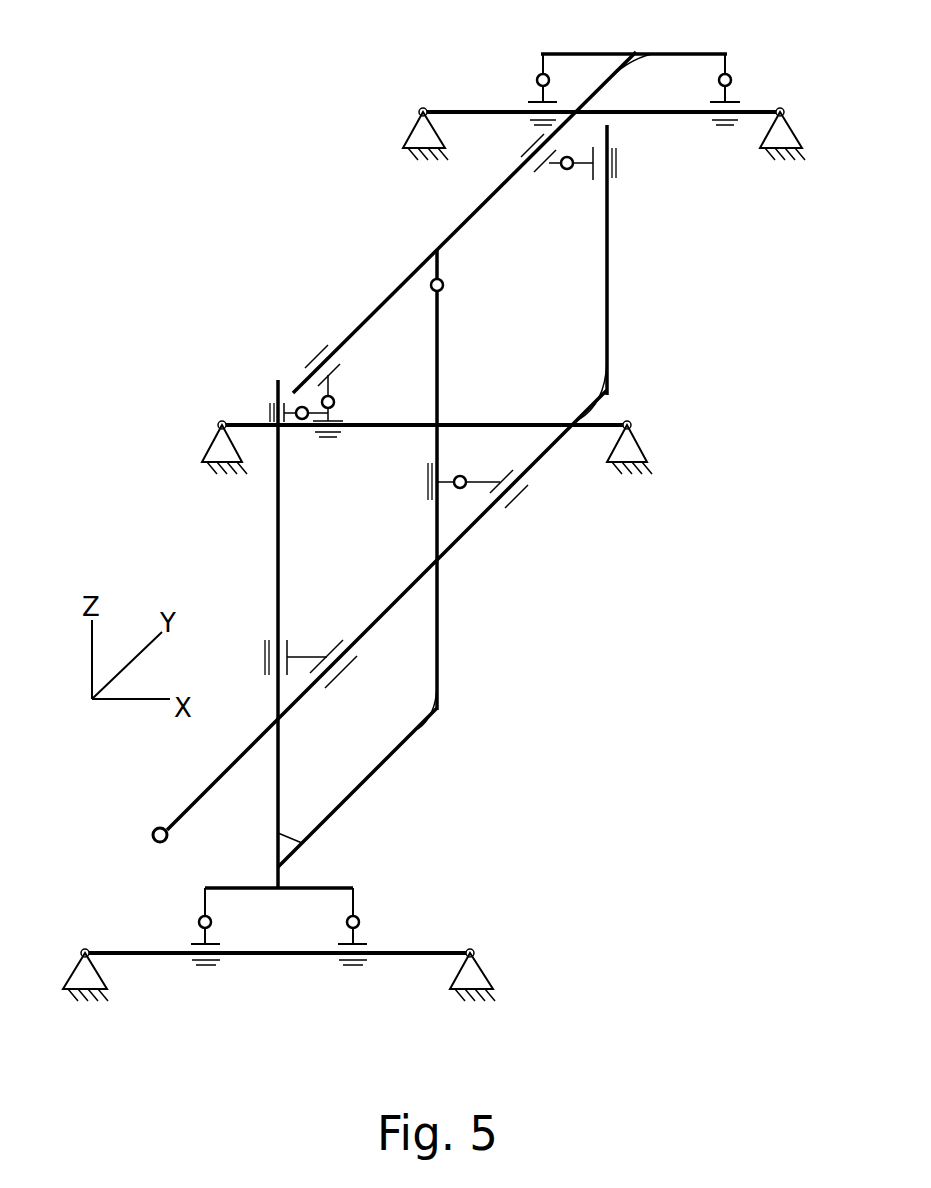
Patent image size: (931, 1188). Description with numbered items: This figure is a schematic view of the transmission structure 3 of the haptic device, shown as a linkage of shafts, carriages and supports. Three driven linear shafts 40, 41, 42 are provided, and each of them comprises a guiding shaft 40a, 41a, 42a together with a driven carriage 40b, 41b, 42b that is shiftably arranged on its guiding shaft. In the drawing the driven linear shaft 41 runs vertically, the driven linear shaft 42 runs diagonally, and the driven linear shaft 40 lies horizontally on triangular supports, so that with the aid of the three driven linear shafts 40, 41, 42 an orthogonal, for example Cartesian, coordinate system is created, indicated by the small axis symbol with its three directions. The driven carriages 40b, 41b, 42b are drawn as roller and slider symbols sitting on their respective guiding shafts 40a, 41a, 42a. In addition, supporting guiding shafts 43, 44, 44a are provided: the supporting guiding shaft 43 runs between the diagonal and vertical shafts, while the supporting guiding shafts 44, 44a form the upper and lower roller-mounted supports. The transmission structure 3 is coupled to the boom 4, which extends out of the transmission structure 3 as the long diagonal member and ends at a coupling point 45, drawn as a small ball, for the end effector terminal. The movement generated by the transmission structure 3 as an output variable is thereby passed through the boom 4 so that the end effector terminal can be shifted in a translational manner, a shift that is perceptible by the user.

The transmission structure 3 is at (472, 222).
The boom 4 is at (607, 270).
The driven linear shaft 40 is at (427, 468).
The guiding shaft 40a is at (588, 430).
The driven carriage 40b is at (328, 440).
The driven linear shaft 41 is at (226, 634).
The guiding shaft 41a is at (278, 507).
The driven carriage 41b is at (265, 657).
The driven linear shaft 42 is at (472, 222).
The guiding shaft 42a is at (403, 282).
The driven carriage 42b is at (527, 152).
The supporting guiding shaft 43 is at (440, 660).
The supporting guiding shaft 44 is at (755, 110).
The supporting guiding shaft 44a is at (413, 952).
The coupling point 45 is at (153, 835).